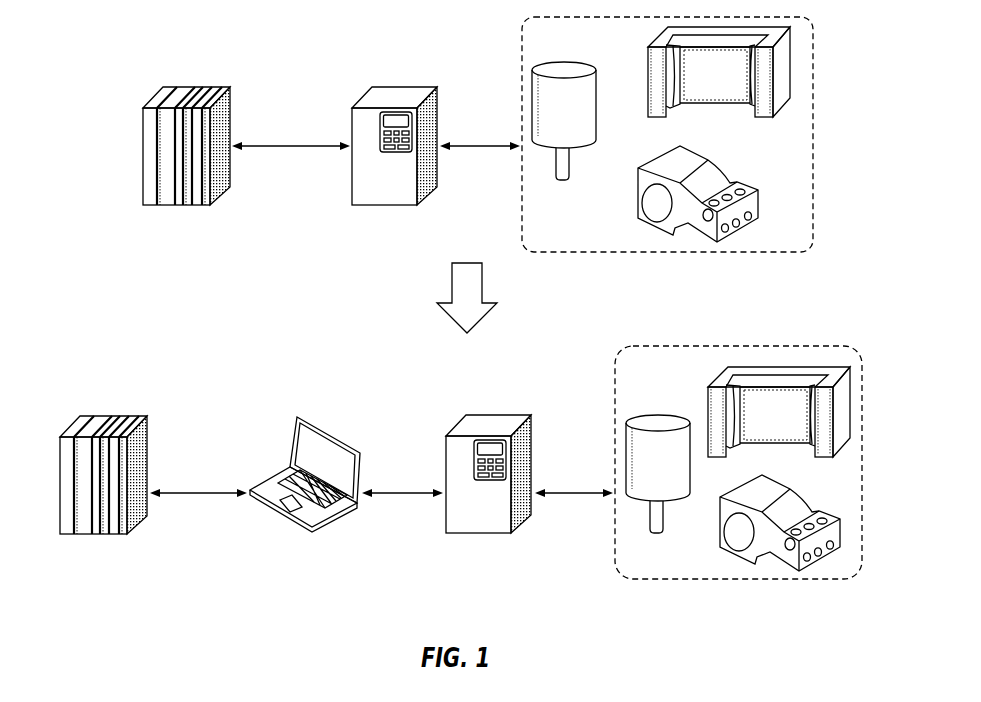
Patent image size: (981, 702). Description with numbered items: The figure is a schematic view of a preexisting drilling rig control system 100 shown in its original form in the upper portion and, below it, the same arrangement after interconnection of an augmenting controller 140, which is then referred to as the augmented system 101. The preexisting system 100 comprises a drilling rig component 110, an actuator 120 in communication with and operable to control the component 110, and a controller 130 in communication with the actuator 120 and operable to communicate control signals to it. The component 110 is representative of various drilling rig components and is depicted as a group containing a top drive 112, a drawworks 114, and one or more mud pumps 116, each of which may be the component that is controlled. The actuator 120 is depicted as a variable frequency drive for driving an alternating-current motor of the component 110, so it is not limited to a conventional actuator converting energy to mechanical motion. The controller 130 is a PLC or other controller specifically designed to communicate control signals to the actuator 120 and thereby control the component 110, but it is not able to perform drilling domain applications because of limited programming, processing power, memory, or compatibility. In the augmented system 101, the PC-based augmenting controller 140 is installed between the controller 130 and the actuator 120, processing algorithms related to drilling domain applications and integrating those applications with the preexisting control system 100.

The preexisting system 100 is at (78, 59).
The augmented system 101 is at (78, 367).
The drilling rig component 110 is at (815, 135).
The top drive 112 is at (563, 182).
The drawworks 114 is at (648, 82).
The mud pumps 116 is at (758, 203).
The actuator 120 is at (405, 85).
The controller 130 is at (200, 84).
The augmenting controller 140 is at (297, 415).